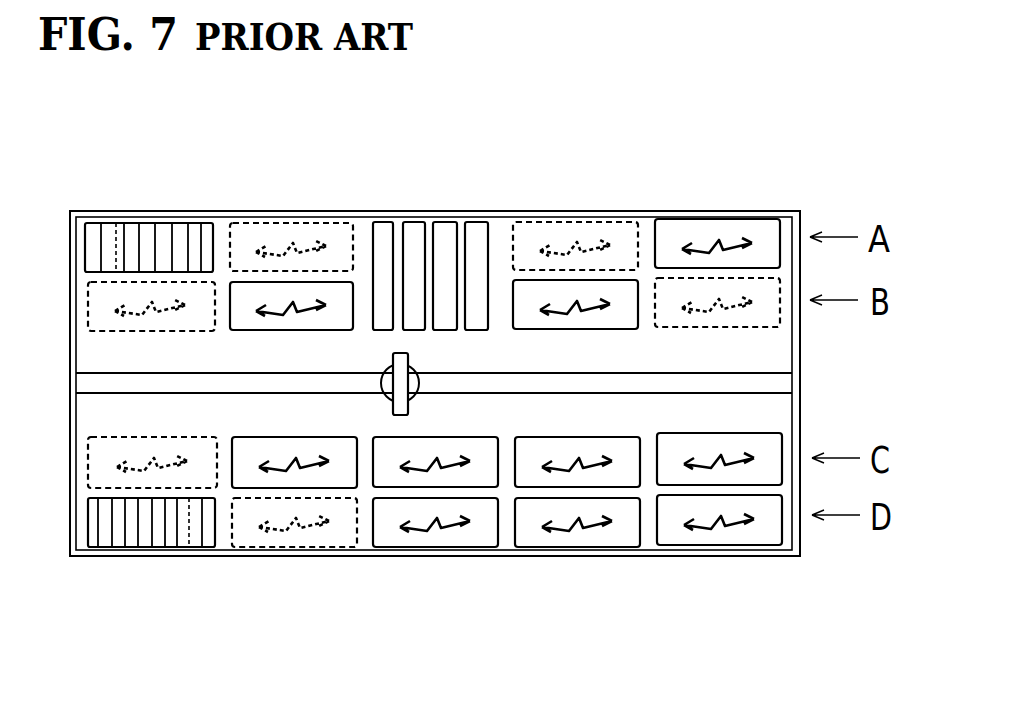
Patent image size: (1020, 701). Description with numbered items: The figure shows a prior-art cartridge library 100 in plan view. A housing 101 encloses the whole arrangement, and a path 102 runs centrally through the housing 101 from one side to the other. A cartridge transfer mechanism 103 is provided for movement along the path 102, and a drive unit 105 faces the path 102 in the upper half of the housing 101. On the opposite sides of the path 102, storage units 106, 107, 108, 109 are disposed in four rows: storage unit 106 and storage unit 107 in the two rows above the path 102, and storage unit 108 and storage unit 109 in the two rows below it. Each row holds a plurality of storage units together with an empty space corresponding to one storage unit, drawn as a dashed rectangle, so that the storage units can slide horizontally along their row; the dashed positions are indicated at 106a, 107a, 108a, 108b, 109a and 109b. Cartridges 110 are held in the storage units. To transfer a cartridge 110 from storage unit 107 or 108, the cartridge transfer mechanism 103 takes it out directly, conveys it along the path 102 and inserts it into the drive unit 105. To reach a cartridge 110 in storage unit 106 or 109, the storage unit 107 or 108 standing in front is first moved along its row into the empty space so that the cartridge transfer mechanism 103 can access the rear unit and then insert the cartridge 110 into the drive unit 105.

The semiconductor module unit 100 is at (575, 555).
The housing 101 is at (680, 556).
The path 102 is at (645, 372).
The cartridge transfer mechanism 103 is at (412, 352).
The drive unit 105 is at (445, 225).
The storage unit 106 is at (129, 184).
The first module position 106a is at (286, 222).
The storage unit 107 is at (323, 290).
The connector slot 107a is at (122, 222).
The storage unit 108 is at (256, 488).
The connector slot 108a is at (183, 548).
The fourth module 108b is at (393, 488).
The storage unit 109 is at (162, 584).
The module position 109a is at (278, 553).
The fifth module 109b is at (466, 555).
The cartridge 110 is at (200, 235).